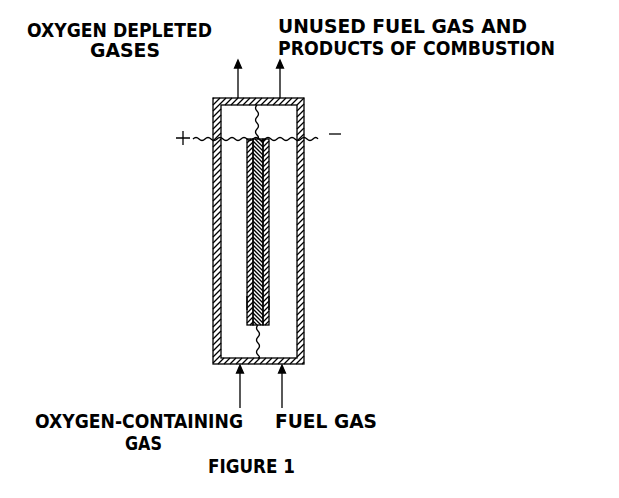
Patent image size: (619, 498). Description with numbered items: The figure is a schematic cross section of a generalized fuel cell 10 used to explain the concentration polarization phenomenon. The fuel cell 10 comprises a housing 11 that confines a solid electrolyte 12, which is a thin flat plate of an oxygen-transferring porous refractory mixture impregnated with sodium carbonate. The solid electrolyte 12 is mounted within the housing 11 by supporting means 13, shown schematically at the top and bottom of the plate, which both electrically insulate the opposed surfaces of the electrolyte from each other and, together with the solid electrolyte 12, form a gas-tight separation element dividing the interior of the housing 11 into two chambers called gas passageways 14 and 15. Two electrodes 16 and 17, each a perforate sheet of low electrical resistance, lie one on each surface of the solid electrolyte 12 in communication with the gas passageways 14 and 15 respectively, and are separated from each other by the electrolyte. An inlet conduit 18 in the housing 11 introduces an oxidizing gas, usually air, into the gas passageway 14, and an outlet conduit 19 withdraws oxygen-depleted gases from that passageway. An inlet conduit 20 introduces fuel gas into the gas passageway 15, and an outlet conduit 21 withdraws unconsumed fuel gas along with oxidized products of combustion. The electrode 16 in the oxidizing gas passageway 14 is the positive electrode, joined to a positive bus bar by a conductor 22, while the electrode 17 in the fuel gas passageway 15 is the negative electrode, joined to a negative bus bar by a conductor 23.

The fuel cell 10 is at (170, 124).
The housing 11 is at (304, 106).
The solid electrolyte 12 is at (256, 187).
The supporting means 13 is at (258, 118).
The gas passageway 14 is at (165, 190).
The gas passageway 15 is at (291, 229).
The electrode 16 is at (247, 303).
The electrode 17 is at (267, 303).
The inlet conduit 18 is at (244, 390).
The outlet conduit 19 is at (239, 90).
The inlet conduit 20 is at (289, 390).
The outlet conduit 21 is at (282, 90).
The conductor 22 is at (208, 142).
The conductor 23 is at (313, 140).